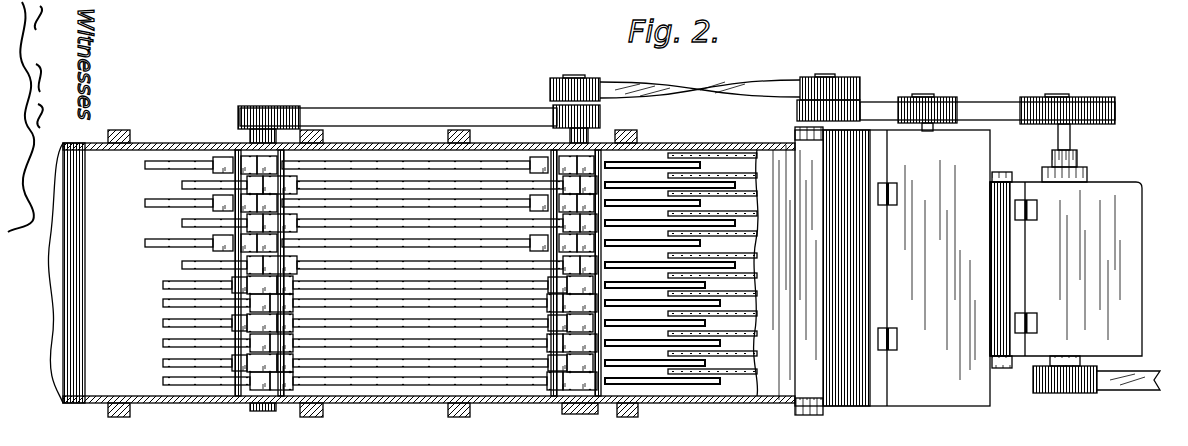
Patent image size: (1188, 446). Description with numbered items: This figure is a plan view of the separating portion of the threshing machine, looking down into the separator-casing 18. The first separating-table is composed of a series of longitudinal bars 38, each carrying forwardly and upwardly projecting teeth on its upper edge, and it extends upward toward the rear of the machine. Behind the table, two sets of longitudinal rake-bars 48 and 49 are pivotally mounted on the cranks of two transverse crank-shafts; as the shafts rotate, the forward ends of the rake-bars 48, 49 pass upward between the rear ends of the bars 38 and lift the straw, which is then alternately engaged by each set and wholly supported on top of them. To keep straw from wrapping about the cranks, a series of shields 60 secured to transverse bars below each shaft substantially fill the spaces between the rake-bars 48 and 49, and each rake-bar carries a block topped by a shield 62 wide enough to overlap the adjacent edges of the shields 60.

The separator-casing 18 is at (663, 404).
The longitudinal bars 38 is at (747, 208).
The rake-bars 48 is at (145, 165).
The rake-bars 49 is at (182, 185).
The shields 60 is at (600, 146).
The shield 62 is at (246, 176).